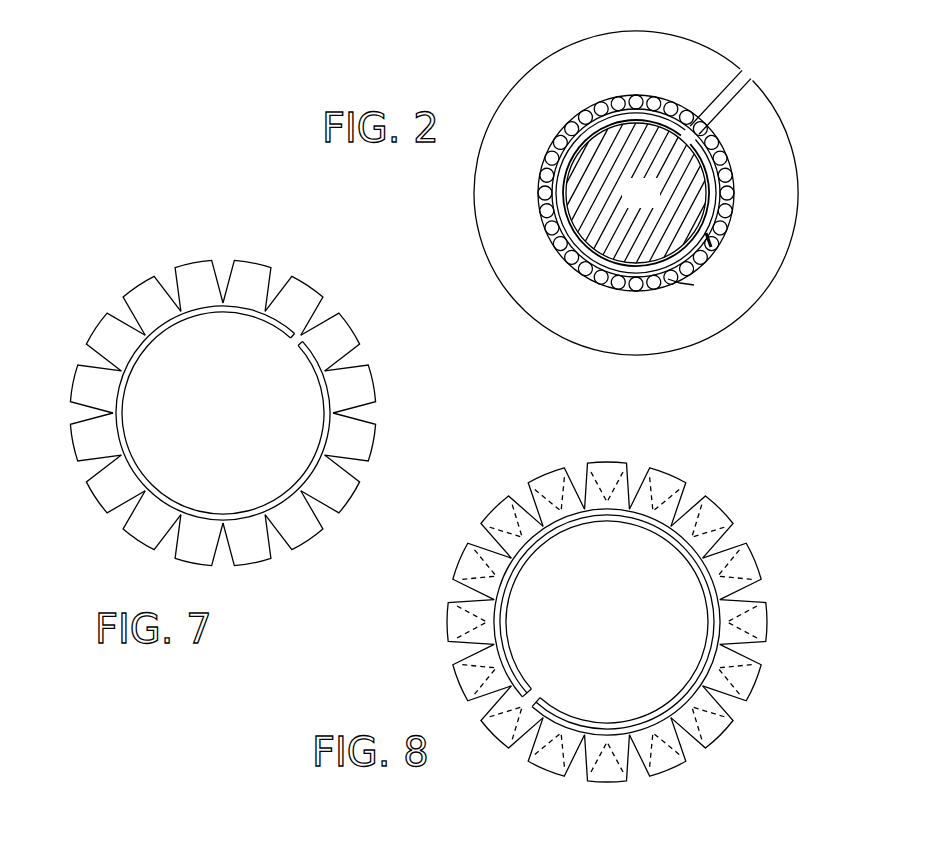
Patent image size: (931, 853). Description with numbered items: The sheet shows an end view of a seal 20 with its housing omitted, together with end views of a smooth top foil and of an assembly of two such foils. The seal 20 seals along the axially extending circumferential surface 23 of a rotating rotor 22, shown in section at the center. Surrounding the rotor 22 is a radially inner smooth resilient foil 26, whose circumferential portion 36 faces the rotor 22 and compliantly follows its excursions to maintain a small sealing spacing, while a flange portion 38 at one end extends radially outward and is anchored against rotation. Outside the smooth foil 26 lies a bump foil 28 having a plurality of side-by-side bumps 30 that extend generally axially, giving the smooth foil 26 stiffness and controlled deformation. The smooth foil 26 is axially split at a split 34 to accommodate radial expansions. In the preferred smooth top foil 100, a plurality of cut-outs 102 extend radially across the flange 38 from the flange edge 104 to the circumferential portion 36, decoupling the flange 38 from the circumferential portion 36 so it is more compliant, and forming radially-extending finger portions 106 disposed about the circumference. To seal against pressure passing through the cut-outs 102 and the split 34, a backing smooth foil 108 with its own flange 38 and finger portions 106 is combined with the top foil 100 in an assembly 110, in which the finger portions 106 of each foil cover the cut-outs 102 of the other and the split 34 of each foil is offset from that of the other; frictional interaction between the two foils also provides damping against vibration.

In FIG. 2, the seal 20 is at (657, 192).
In FIG. 2, the rotor 22 is at (659, 205).
In FIG. 2, the circumferential surface 23 is at (560, 128).
In FIG. 2, the smooth resilient foil 26 is at (680, 283).
In FIG. 2, the bump foil 28 is at (713, 147).
In FIG. 2, the bumps 30 is at (629, 187).
In FIG. 2, the split 34 is at (740, 72).
In FIG. 7, the split 34 is at (330, 310).
In FIG. 8, the split 34 is at (683, 500).
In FIG. 2, the circumferential portion 36 is at (712, 230).
In FIG. 7, the circumferential portion 36 is at (142, 357).
In FIG. 8, the circumferential portion 36 is at (693, 563).
In FIG. 2, the flange portion 38 is at (767, 163).
In FIG. 7, the flange portion 38 is at (249, 385).
In FIG. 8, the flange portion 38 is at (645, 606).
In FIG. 7, the smooth top foil 100 is at (249, 355).
In FIG. 8, the smooth top foil 100 is at (645, 601).
In FIG. 7, the cut-outs 102 is at (122, 310).
In FIG. 8, the cut-outs 102 is at (723, 505).
In FIG. 7, the flange edge 104 is at (262, 268).
In FIG. 7, the finger portions 106 is at (195, 270).
In FIG. 8, the finger portions 106 is at (758, 563).
In FIG. 8, the backing smooth foil 108 is at (550, 480).
In FIG. 8, the assembly 110 is at (645, 601).